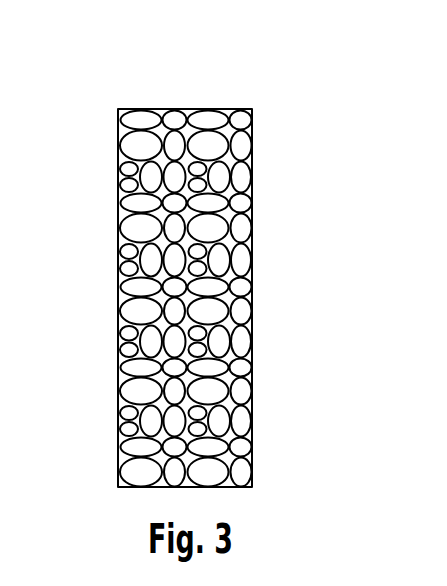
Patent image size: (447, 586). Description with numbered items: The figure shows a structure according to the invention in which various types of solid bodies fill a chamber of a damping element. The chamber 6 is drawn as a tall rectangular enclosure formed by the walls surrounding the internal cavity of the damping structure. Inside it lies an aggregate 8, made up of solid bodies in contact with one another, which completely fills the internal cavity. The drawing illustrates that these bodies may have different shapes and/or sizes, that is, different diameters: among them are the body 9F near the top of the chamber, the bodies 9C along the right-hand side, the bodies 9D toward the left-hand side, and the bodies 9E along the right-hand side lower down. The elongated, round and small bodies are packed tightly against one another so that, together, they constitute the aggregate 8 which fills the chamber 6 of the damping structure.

The chamber 6 is at (260, 394).
The aggregate 8 is at (134, 313).
The solid body 9C is at (243, 122).
The solid body 9D is at (138, 150).
The solid body 9E is at (243, 263).
The solid body 9F is at (211, 113).